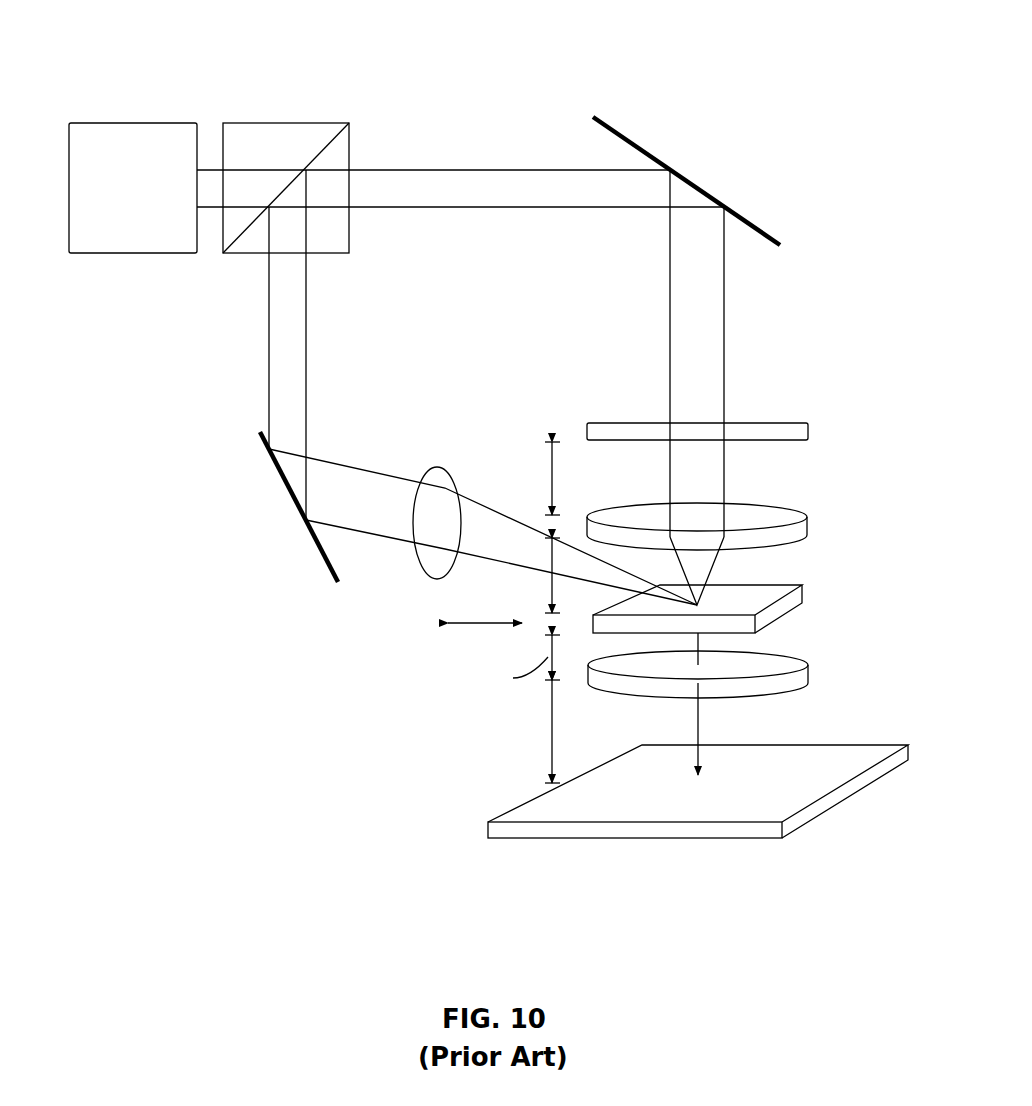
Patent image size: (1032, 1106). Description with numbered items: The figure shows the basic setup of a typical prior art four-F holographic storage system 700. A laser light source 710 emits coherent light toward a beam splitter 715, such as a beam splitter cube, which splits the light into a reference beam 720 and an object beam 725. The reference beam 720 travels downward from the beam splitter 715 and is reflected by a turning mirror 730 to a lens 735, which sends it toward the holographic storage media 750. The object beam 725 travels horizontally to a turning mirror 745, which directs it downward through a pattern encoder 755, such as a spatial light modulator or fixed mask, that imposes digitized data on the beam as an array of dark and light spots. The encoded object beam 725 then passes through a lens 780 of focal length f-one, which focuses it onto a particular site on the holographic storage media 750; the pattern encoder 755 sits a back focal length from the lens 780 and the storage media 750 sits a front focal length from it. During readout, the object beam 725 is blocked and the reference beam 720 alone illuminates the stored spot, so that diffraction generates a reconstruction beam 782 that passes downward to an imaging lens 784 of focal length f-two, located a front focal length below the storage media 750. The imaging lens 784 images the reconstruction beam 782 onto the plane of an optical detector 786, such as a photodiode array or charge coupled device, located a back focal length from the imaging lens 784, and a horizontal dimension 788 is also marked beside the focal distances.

The holographic storage system 700 is at (266, 44).
The laser light source 710 is at (108, 253).
The beam splitter 715 is at (268, 123).
The reference beam 720 is at (268, 343).
The object beam 725 is at (440, 170).
The turning mirror 730 is at (275, 468).
The lens 735 is at (455, 490).
The turning mirror 745 is at (628, 140).
The holographic storage media 750 is at (805, 598).
The pattern encoder 755 is at (757, 423).
The lens 780 is at (808, 527).
The reconstruction beam 782 is at (700, 736).
The imaging lens 784 is at (808, 675).
The optical detector 786 is at (620, 830).
The offset distance 788 is at (485, 607).